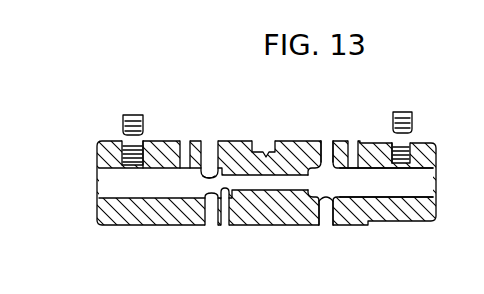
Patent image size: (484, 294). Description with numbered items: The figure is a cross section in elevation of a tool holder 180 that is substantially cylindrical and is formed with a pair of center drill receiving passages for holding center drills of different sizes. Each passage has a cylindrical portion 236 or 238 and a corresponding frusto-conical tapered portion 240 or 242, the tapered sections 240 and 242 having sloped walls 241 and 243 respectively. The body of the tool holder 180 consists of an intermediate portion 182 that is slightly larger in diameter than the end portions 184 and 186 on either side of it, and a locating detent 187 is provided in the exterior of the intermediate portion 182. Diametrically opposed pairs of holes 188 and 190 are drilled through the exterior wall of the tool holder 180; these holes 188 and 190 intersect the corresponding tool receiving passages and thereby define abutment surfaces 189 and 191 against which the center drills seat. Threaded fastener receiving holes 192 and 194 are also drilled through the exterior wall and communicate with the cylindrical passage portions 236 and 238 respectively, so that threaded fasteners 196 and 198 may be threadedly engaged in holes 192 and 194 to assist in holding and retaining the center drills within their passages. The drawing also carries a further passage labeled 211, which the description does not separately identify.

The tool holder 180 is at (242, 186).
The intermediate portion 182 is at (240, 141).
The end portion 184 is at (160, 141).
The end portion 186 is at (373, 143).
The locating detent 187 is at (268, 141).
The holes 188 is at (212, 141).
The abutment surface 189 is at (207, 176).
The holes 190 is at (327, 141).
The abutment surface 191 is at (340, 179).
The threaded fastener receiving hole 192 is at (127, 141).
The threaded fastener receiving hole 194 is at (407, 143).
The threaded fastener 196 is at (133, 115).
The threaded fastener 198 is at (413, 115).
The passage 211 is at (183, 141).
The cylindrical portion 236 is at (123, 183).
The cylindrical portion 238 is at (403, 185).
The frusto-conical tapered portion 240 is at (213, 188).
The sloped wall 241 is at (226, 224).
The frusto-conical tapered portion 242 is at (312, 164).
The sloped wall 243 is at (312, 200).